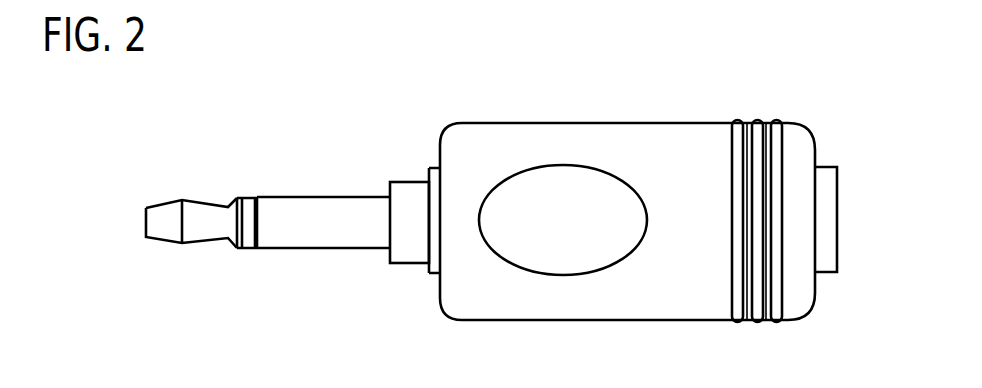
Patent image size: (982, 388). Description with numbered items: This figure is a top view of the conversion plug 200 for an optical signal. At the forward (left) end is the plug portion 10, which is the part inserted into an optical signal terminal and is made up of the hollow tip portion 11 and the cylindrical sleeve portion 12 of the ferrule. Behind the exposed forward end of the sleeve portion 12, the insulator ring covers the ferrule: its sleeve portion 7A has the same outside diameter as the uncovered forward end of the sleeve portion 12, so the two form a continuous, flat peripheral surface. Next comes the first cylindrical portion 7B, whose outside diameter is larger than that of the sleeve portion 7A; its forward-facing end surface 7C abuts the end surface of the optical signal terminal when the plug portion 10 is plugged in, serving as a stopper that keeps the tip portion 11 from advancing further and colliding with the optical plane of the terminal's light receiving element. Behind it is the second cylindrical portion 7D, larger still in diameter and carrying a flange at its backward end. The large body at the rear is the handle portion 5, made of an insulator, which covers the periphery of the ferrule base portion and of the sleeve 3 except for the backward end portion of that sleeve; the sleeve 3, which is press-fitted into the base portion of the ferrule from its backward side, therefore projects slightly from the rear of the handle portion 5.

The conversion plug 200 is at (431, 118).
The plug portion 10 is at (388, 171).
The tip portion 11 is at (198, 233).
The sleeve portion 12 is at (247, 235).
The sleeve portion of the insulator ring 7A is at (298, 240).
The first cylindrical portion 7B is at (408, 253).
The end surface 7C is at (387, 253).
The second cylindrical portion 7D is at (435, 268).
The handle portion 5 is at (678, 293).
The sleeve 3 is at (825, 260).